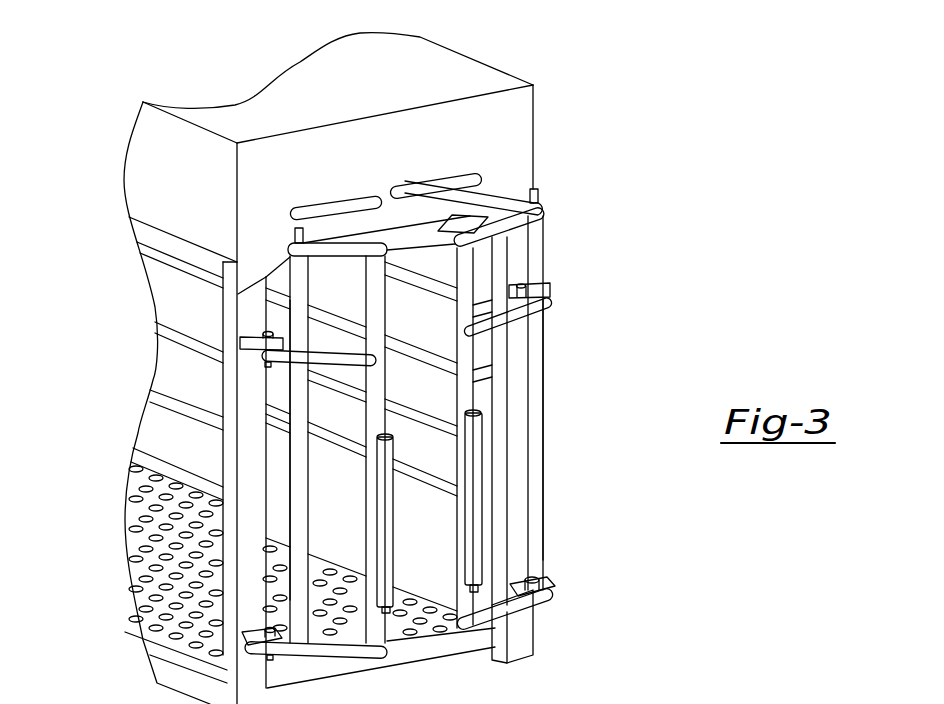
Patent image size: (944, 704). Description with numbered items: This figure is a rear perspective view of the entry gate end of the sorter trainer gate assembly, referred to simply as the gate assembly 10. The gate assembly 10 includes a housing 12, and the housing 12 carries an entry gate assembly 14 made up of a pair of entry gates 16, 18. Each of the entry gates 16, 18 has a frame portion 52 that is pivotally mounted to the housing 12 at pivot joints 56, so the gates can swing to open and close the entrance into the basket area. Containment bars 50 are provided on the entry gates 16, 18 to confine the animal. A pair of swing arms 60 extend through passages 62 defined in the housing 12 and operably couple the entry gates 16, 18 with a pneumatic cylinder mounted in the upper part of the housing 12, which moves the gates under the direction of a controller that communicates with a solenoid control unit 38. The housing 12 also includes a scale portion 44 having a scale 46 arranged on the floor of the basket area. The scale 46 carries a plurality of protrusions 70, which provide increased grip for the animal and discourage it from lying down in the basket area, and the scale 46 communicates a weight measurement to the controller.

The gate assembly 10 is at (592, 55).
The housing 12 is at (513, 113).
The entry gate assembly 14 is at (571, 278).
The entry gate 16 is at (378, 300).
The entry gate 18 is at (535, 248).
The solenoid control unit 38 is at (668, 703).
The scale portion 44 is at (433, 603).
The scale 46 is at (395, 582).
The containment bars 50 is at (536, 370).
The frame portions 52 is at (333, 243).
The pivot joints 56 is at (523, 583).
The swing arms 60 is at (335, 210).
The passages 62 is at (403, 193).
The protrusions 70 is at (398, 622).